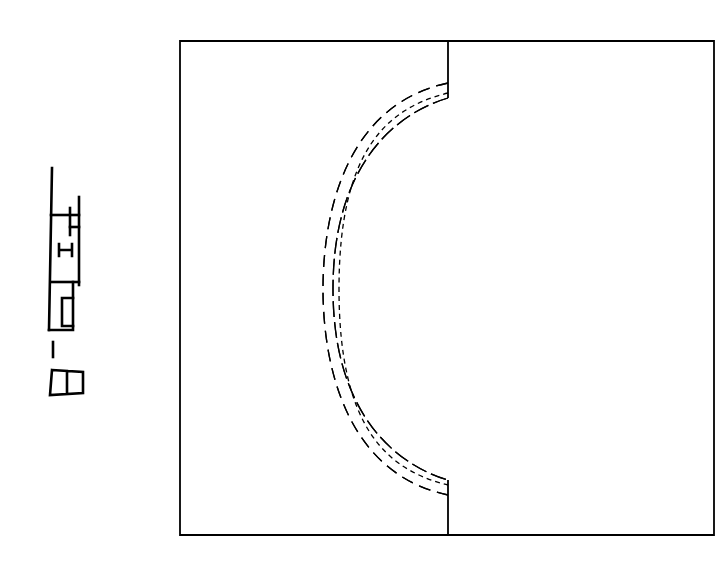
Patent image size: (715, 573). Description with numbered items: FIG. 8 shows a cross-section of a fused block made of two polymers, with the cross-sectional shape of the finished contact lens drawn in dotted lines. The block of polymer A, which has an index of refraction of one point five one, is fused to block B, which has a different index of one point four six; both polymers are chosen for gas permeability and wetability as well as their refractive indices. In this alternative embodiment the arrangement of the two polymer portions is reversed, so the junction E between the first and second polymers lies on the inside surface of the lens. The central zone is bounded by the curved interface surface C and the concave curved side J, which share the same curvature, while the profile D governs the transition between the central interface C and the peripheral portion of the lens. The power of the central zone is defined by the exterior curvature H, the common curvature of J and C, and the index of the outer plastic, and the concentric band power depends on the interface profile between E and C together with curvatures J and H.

The block of polymer A is at (581, 288).
The block B is at (314, 288).
The interface surface C is at (332, 310).
The profile D is at (380, 167).
The junction E is at (358, 383).
The exterior curvature H is at (383, 462).
The concave curved side J is at (340, 300).